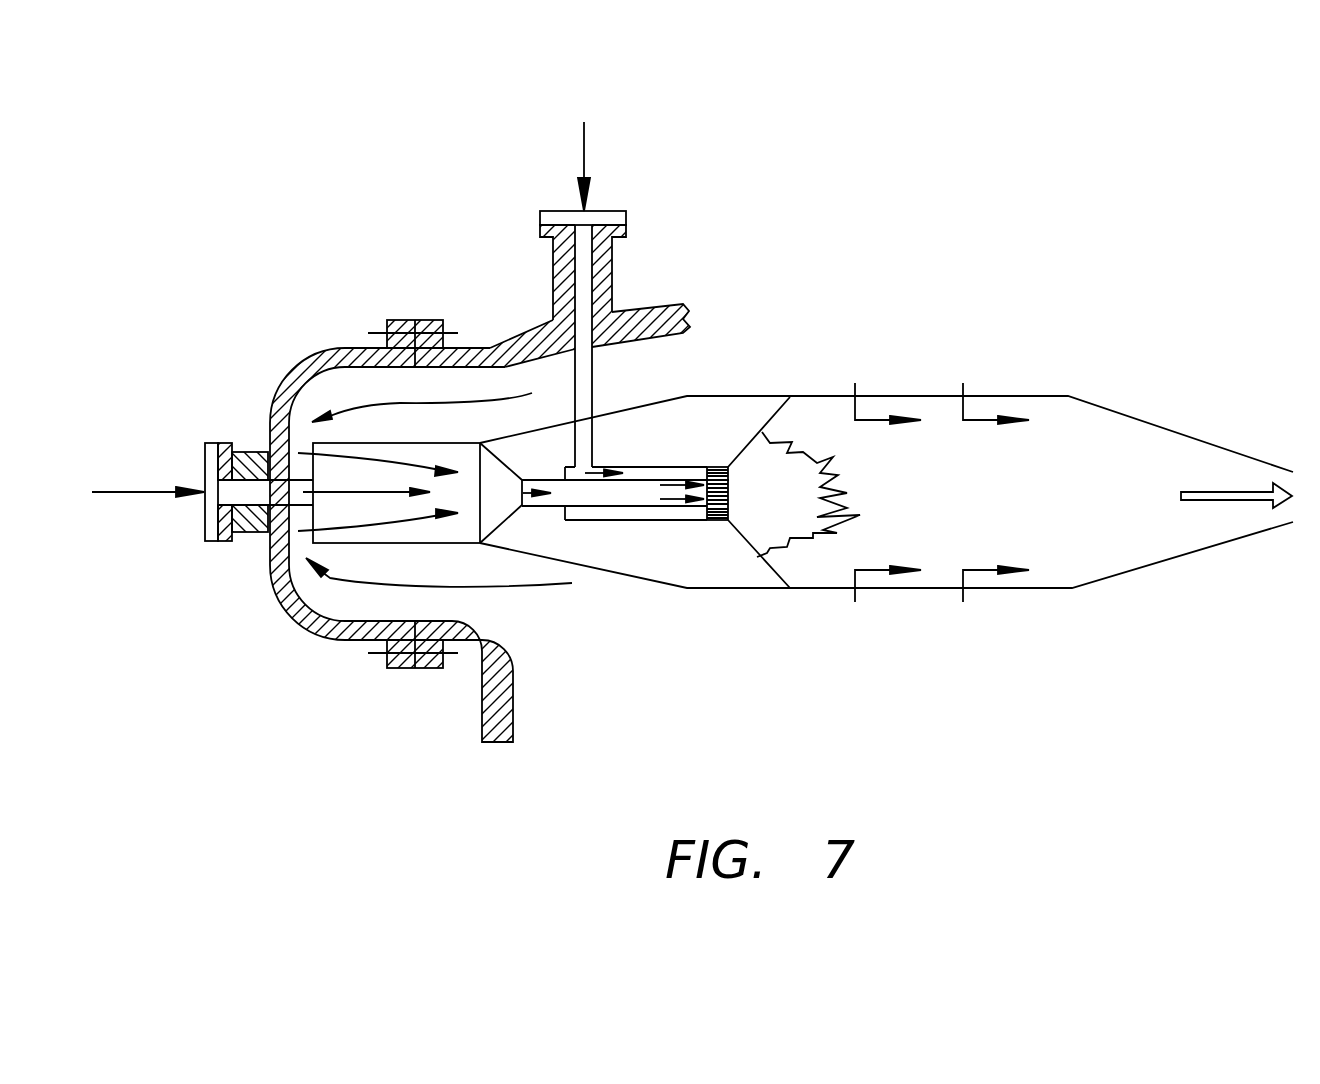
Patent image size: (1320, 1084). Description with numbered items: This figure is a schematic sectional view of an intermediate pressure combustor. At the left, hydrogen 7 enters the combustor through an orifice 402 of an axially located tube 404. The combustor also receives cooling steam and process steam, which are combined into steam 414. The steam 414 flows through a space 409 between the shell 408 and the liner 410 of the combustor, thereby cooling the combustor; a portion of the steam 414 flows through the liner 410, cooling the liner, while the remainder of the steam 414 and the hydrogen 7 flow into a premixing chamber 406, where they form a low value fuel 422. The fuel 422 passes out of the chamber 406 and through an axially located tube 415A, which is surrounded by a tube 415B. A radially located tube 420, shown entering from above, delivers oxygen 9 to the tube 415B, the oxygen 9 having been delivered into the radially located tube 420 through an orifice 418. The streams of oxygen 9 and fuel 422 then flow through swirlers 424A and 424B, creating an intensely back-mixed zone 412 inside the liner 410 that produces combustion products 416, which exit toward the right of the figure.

The hydrogen 7 is at (130, 492).
The oxygen 9 is at (585, 140).
The orifice 402 is at (201, 516).
The axially located tube 404 is at (250, 534).
The premixing chamber 406 is at (380, 545).
The shell 408 is at (655, 305).
The space 409 is at (662, 389).
The liner 410 is at (773, 397).
The intensely back-mixed zone 412 is at (800, 500).
The steam 414 is at (505, 397).
The axially located tube 415A is at (547, 507).
The tube 415B is at (666, 521).
The combustion products 416 is at (1217, 492).
The orifice 418 is at (597, 211).
The radially located tube 420 is at (598, 257).
The low value fuel 422 is at (510, 494).
The swirler 424A is at (722, 466).
The swirler 424B is at (728, 495).